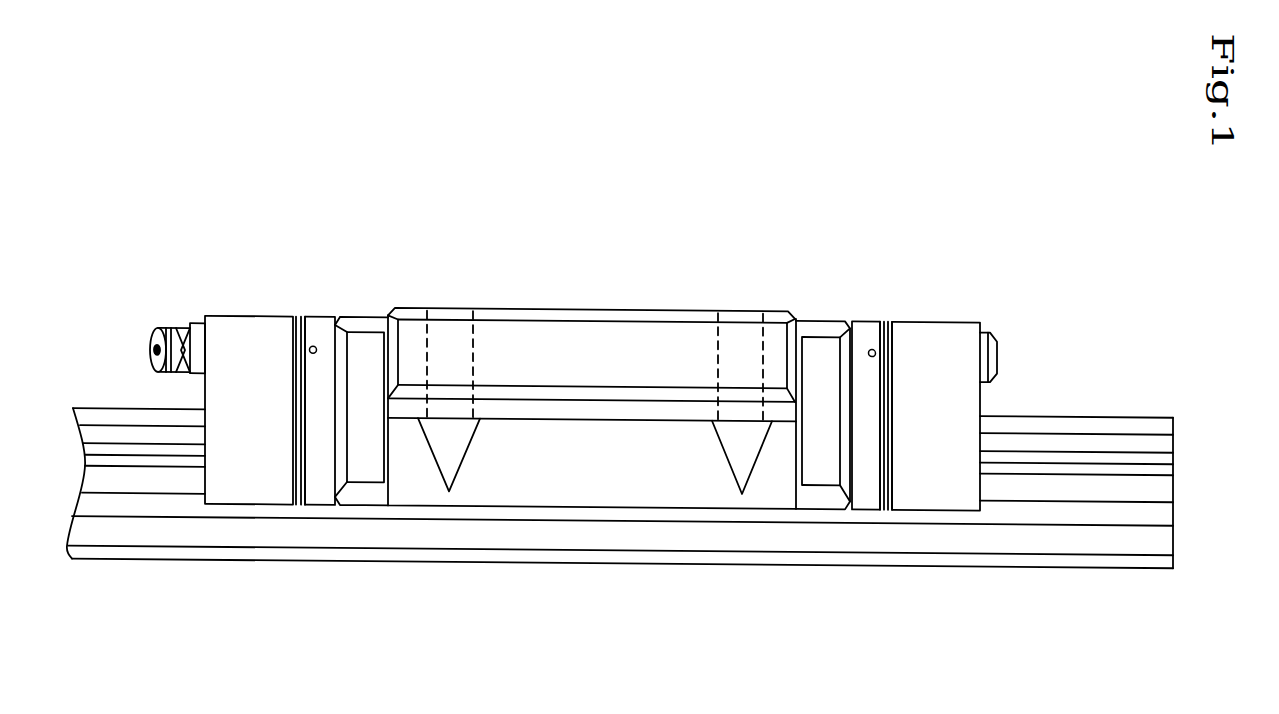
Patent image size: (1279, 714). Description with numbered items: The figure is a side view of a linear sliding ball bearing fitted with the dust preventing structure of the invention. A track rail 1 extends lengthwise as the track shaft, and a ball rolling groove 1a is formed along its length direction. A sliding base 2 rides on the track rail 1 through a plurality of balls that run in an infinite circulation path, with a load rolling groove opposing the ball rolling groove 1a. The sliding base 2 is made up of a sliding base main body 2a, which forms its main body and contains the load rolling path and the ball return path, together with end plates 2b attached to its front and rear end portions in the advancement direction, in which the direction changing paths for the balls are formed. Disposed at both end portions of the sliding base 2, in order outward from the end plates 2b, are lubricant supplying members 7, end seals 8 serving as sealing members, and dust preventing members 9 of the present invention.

The track rail 1 is at (1023, 568).
The ball rolling groove 1a is at (1147, 460).
The sliding base 2 is at (637, 306).
The sliding base main body 2a is at (575, 310).
The end plate 2b is at (364, 340).
The lubricant supplying member 7 is at (314, 346).
The end seal 8 is at (293, 353).
The dust preventing member 9 is at (217, 313).